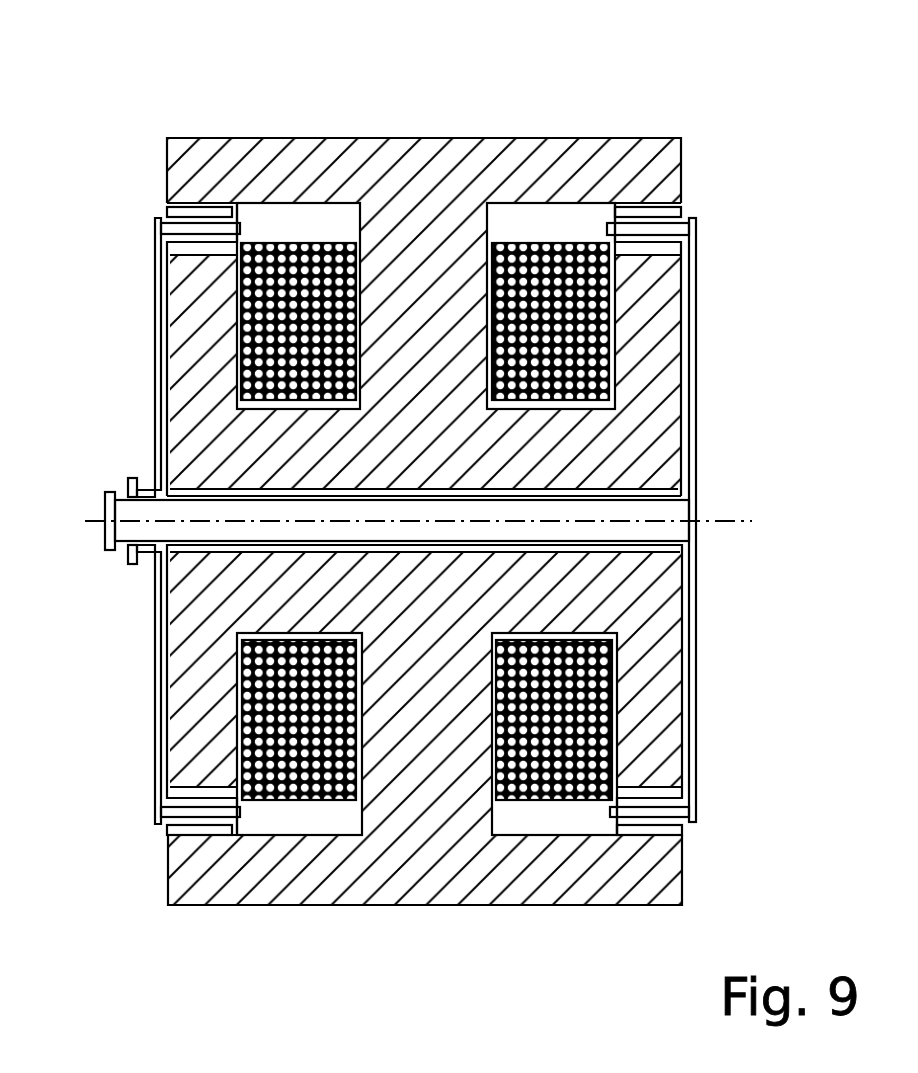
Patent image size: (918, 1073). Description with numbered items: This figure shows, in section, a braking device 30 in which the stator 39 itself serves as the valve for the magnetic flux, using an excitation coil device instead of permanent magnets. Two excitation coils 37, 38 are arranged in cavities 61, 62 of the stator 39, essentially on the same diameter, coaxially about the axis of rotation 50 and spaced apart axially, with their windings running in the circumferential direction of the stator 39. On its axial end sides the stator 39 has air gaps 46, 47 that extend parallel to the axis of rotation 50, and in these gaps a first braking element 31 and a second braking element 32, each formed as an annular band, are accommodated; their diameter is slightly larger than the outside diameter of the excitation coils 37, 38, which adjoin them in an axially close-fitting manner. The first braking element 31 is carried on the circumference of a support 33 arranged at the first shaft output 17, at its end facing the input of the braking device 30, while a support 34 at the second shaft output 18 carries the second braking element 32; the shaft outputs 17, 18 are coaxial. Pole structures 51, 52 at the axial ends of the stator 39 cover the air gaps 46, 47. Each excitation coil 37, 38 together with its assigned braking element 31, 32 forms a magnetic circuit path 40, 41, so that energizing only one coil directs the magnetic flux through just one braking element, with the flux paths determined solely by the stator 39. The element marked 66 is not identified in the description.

The first shaft output 17 is at (105, 545).
The second shaft output 18 is at (130, 480).
The braking device 30 is at (166, 170).
The first braking element 31 is at (168, 228).
The second braking element 32 is at (690, 232).
The support 33 is at (155, 627).
The support 34 is at (693, 575).
The first excitation coil 37 is at (265, 370).
The second excitation coil 38 is at (565, 283).
The stator 39 is at (398, 180).
The magnetic circuit path 40 is at (266, 130).
The magnetic circuit path 41 is at (582, 130).
The air gap 46 is at (252, 813).
The air gap 47 is at (603, 811).
The axis of rotation 50 is at (100, 521).
The pole structure 51 is at (166, 829).
The pole structure 52 is at (692, 831).
The cavity 61 is at (310, 223).
The cavity 62 is at (542, 227).
The top yoke block 66 is at (670, 147).